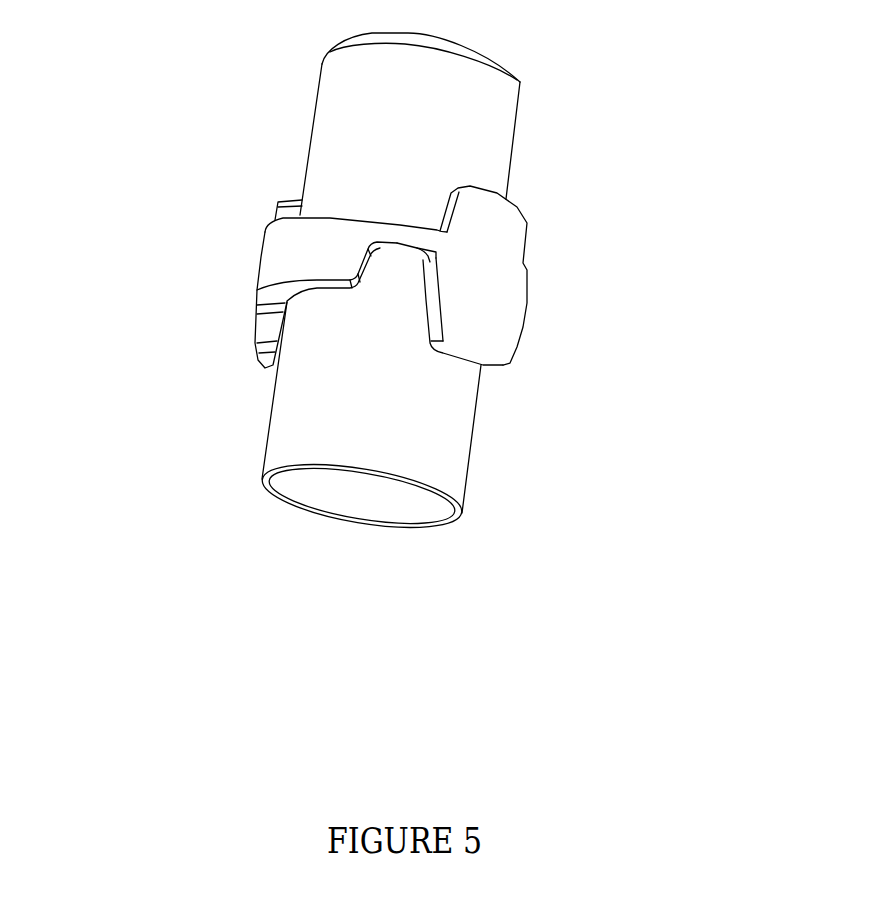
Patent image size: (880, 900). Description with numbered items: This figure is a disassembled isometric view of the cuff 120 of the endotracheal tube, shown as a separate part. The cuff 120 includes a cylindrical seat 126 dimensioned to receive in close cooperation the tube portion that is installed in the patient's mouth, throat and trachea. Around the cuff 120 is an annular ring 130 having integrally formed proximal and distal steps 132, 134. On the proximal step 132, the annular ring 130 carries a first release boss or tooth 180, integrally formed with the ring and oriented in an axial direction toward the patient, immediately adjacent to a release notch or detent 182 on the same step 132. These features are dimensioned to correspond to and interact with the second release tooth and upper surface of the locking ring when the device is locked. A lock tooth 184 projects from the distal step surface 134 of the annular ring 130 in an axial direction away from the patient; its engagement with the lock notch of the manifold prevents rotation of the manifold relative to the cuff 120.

The cuff 120 is at (439, 336).
The cylindrical seat 126 is at (336, 549).
The annular ring 130 is at (388, 297).
The proximal step 132 is at (272, 297).
The distal step 134 is at (327, 217).
The first release tooth 180 is at (488, 340).
The release notch 182 is at (403, 245).
The lock tooth 184 is at (592, 268).